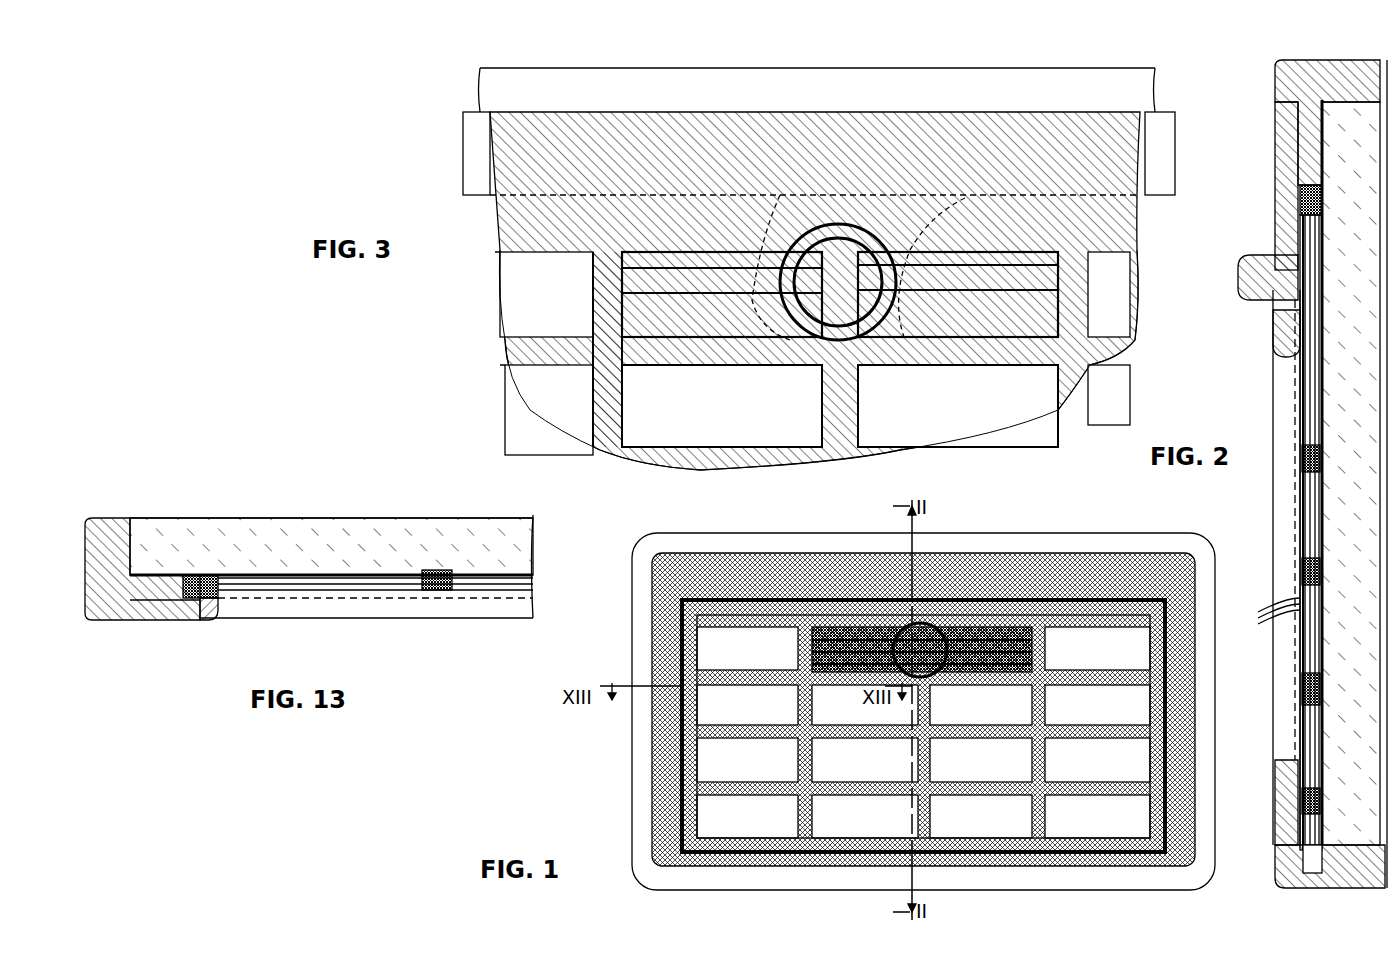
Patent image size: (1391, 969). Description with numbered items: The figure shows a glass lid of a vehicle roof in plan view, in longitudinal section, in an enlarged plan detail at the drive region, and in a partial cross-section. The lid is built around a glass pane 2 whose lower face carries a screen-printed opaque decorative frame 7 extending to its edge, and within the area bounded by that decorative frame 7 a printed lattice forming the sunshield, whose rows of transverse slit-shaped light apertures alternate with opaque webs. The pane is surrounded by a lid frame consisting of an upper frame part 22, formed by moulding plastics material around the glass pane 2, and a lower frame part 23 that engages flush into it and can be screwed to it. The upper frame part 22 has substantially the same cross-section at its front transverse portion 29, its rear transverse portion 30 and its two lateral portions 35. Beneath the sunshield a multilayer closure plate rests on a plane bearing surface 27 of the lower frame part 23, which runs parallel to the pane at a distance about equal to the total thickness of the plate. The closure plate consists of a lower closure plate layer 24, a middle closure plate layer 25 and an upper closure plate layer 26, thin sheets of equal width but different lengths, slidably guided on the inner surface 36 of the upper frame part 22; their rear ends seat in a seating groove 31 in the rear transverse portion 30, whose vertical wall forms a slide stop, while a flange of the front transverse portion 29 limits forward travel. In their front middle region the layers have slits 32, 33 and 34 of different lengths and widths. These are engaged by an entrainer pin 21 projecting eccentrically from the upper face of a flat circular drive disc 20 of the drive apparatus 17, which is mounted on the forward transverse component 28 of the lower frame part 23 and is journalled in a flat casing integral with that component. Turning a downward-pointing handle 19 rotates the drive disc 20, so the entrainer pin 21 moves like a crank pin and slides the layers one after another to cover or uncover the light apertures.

In FIG. 2, the glass pane 2 is at (1320, 372).
In FIG. 13, the glass pane 2 is at (352, 530).
In FIG. 3, the decorative frame 7 is at (510, 218).
In FIG. 2, the decorative frame 7 is at (1322, 163).
In FIG. 13, the decorative frame 7 is at (158, 570).
In FIG. 1, the decorative frame 7 is at (738, 575).
In FIG. 3, the drive apparatus 17 is at (758, 320).
In FIG. 2, the handle 19 is at (1236, 278).
In FIG. 2, the drive disc 20 is at (1288, 240).
In FIG. 2, the entrainer pin 21 is at (1322, 220).
In FIG. 3, the upper frame part 22 is at (1160, 88).
In FIG. 2, the upper frame part 22 is at (1312, 62).
In FIG. 13, the upper frame part 22 is at (86, 622).
In FIG. 1, the upper frame part 22 is at (650, 636).
In FIG. 3, the lower frame part 23 is at (455, 185).
In FIG. 2, the lower frame part 23 is at (1270, 206).
In FIG. 13, the lower frame part 23 is at (228, 608).
In FIG. 13, the lower closure plate layer 24 is at (432, 592).
In FIG. 13, the middle closure plate layer 25 is at (450, 586).
In FIG. 13, the upper closure plate layer 26 is at (460, 578).
In FIG. 2, the plane bearing surface 27 is at (1285, 770).
In FIG. 13, the plane bearing surface 27 is at (203, 612).
In FIG. 3, the forward transverse component 28 is at (1168, 171).
In FIG. 3, the front transverse portion 29 is at (490, 84).
In FIG. 2, the front transverse portion 29 is at (1285, 100).
In FIG. 2, the rear transverse portion 30 is at (1278, 883).
In FIG. 2, the seating groove 31 is at (1310, 862).
In FIG. 3, the slit 32 is at (880, 225).
In FIG. 1, the slit 32 is at (922, 650).
In FIG. 2, the slit 33 is at (1312, 248).
In FIG. 2, the slit 34 is at (1315, 278).
In FIG. 13, the lateral portions 35 is at (100, 528).
In FIG. 13, the inner surface 36 is at (195, 578).